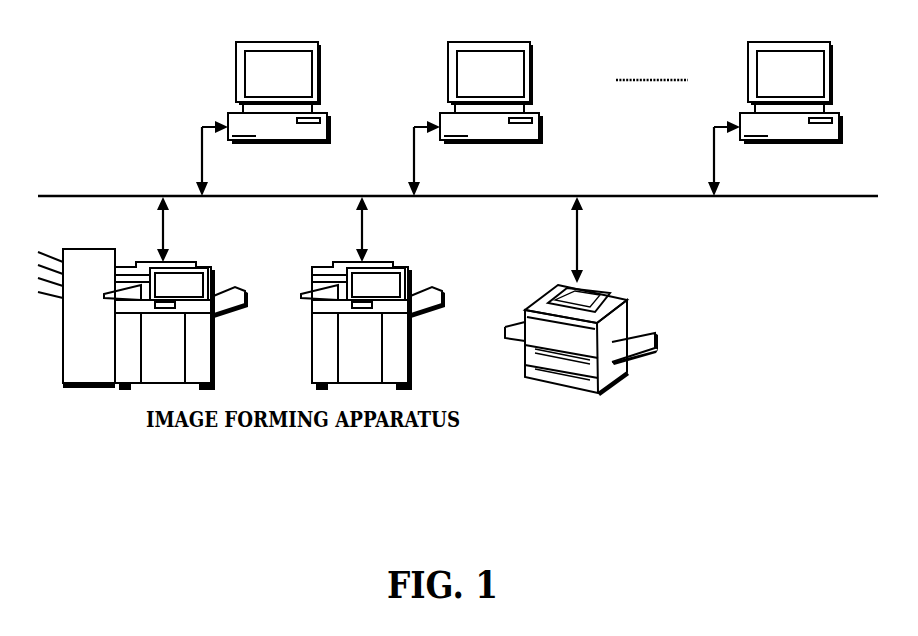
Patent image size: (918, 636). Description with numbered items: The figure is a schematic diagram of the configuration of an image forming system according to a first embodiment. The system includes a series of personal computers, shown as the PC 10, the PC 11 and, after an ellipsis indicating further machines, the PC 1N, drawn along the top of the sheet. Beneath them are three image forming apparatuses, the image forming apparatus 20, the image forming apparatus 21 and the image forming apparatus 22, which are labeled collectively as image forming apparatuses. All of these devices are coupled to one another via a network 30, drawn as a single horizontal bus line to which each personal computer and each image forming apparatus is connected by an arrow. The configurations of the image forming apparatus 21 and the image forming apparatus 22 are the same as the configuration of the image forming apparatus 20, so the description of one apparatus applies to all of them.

The personal computer 10 is at (325, 112).
The personal computer 11 is at (538, 112).
The personal computer 1N is at (838, 112).
The image forming apparatus 20 is at (210, 268).
The image forming apparatus 21 is at (408, 267).
The image forming apparatus 22 is at (598, 290).
The network 30 is at (460, 197).